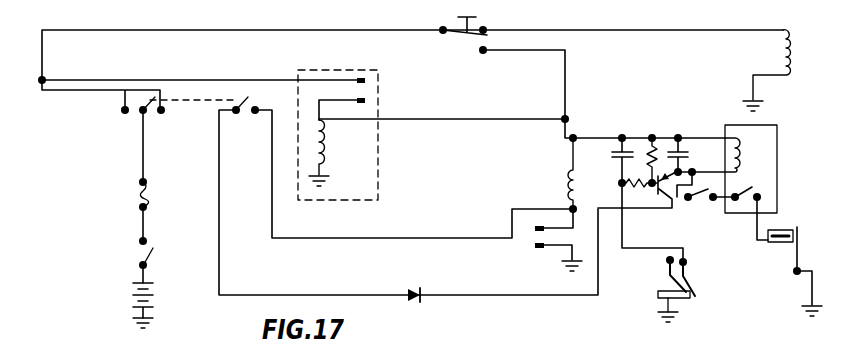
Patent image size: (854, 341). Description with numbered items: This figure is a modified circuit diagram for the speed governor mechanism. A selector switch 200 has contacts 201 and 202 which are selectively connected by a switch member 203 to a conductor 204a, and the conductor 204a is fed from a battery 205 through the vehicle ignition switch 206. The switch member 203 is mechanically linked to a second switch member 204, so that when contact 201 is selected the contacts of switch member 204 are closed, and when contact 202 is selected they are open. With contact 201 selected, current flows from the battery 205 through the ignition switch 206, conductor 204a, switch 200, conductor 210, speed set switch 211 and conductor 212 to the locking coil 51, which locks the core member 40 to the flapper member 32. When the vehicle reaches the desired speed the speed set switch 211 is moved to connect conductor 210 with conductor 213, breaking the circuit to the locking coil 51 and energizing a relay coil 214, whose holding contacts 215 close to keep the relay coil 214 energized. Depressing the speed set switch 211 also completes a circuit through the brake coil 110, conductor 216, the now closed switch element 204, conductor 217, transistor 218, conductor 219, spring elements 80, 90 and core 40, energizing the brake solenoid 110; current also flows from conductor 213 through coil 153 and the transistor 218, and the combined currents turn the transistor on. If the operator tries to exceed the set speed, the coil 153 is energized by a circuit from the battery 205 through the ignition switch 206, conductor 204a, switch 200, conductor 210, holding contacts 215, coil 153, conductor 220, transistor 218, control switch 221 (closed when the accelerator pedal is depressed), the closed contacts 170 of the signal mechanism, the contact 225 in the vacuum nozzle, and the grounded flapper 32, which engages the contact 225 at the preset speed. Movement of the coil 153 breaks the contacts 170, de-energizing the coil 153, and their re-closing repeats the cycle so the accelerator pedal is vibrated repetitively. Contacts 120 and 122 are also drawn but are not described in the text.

The selector switch 200 is at (68, 121).
The contact 201 is at (162, 114).
The contact 202 is at (122, 112).
The switch member 203 is at (130, 99).
The second switch member 204 is at (240, 108).
The conductor 204a is at (150, 181).
The battery 205 is at (152, 291).
The vehicle ignition switch 206 is at (152, 248).
The conductor 210 is at (109, 91).
The speed set switch 211 is at (484, 16).
The conductor 212 is at (654, 31).
The conductor 213 is at (566, 75).
The relay coil 214 is at (327, 147).
The holding contacts 215 is at (368, 93).
The conductor 216 is at (403, 240).
The conductor 217 is at (478, 296).
The transistor 218 is at (652, 222).
The conductor 219 is at (657, 191).
The conductor 220 is at (706, 165).
The control switch 221 is at (714, 204).
The contact 225 is at (786, 246).
The locking coil 51 is at (776, 46).
The brake coil 110 is at (569, 182).
The contact 120 is at (543, 229).
The contact 122 is at (535, 246).
The electrical coil 153 is at (746, 158).
The contacts 170 is at (756, 195).
The flapper member 32 is at (801, 243).
The spring element 90 is at (666, 270).
The spring element 80 is at (686, 268).
The core member 40 is at (665, 292).